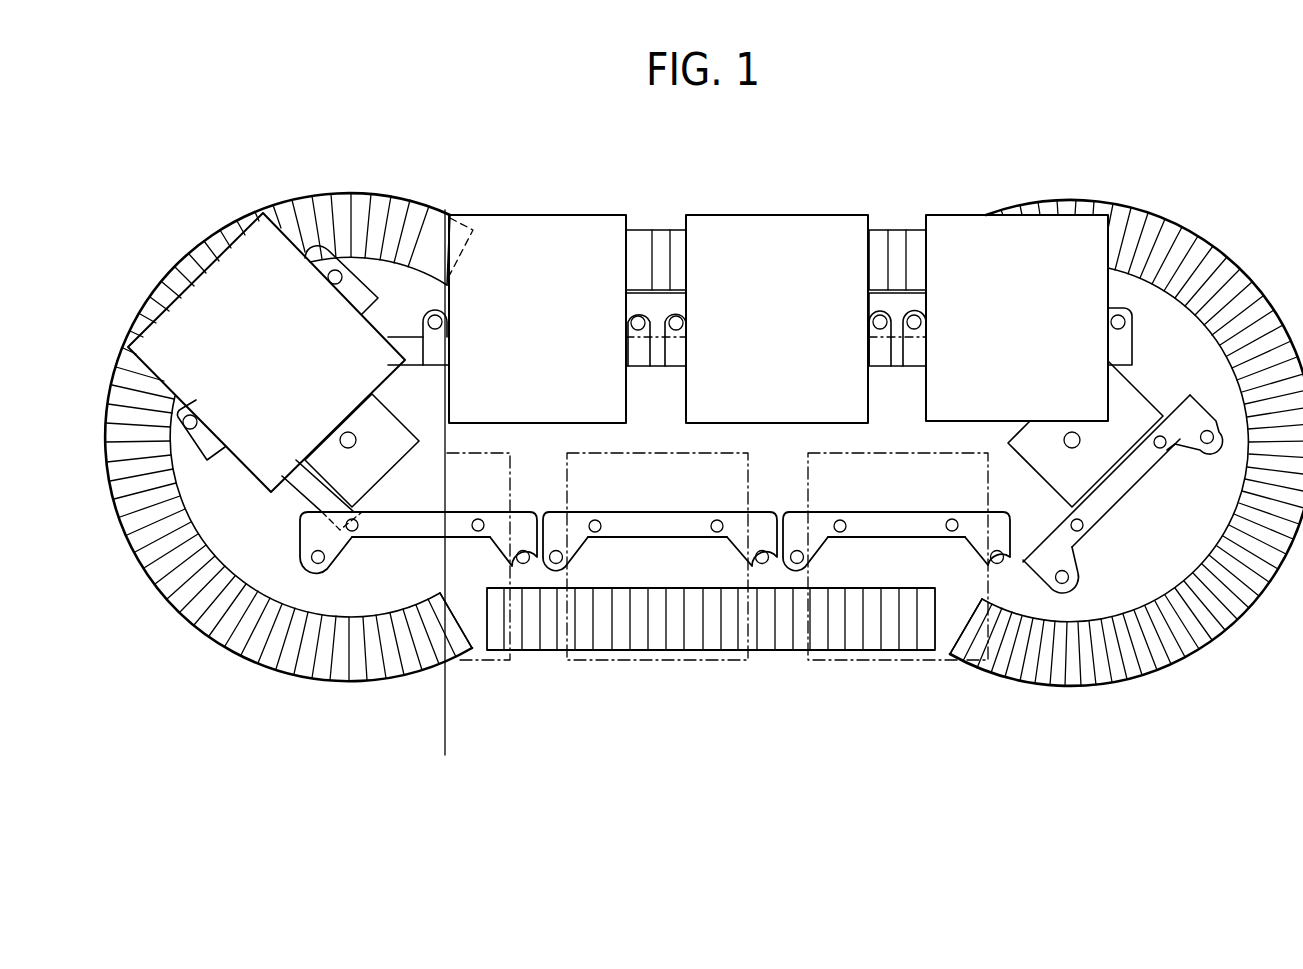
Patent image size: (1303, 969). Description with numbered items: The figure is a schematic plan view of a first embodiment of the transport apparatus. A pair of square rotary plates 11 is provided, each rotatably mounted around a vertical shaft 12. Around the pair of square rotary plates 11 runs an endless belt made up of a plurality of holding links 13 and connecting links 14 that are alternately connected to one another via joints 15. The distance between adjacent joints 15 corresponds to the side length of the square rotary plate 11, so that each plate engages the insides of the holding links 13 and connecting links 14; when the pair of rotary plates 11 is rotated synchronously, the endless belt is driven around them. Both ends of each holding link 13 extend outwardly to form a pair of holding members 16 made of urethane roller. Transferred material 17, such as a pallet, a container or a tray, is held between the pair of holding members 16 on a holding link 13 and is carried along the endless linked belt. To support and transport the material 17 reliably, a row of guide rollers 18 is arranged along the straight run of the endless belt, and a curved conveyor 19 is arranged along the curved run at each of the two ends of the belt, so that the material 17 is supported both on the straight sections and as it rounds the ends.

The square rotary plate 11 is at (380, 467).
The vertical shaft 12 is at (356, 440).
The holding link 13 is at (1133, 335).
The connecting link 14 is at (1137, 407).
The joint 15 is at (1163, 448).
The holding member 16 is at (1124, 316).
The material 17 is at (236, 264).
The guide roller 18 is at (892, 237).
The curved conveyor 19 is at (305, 210).